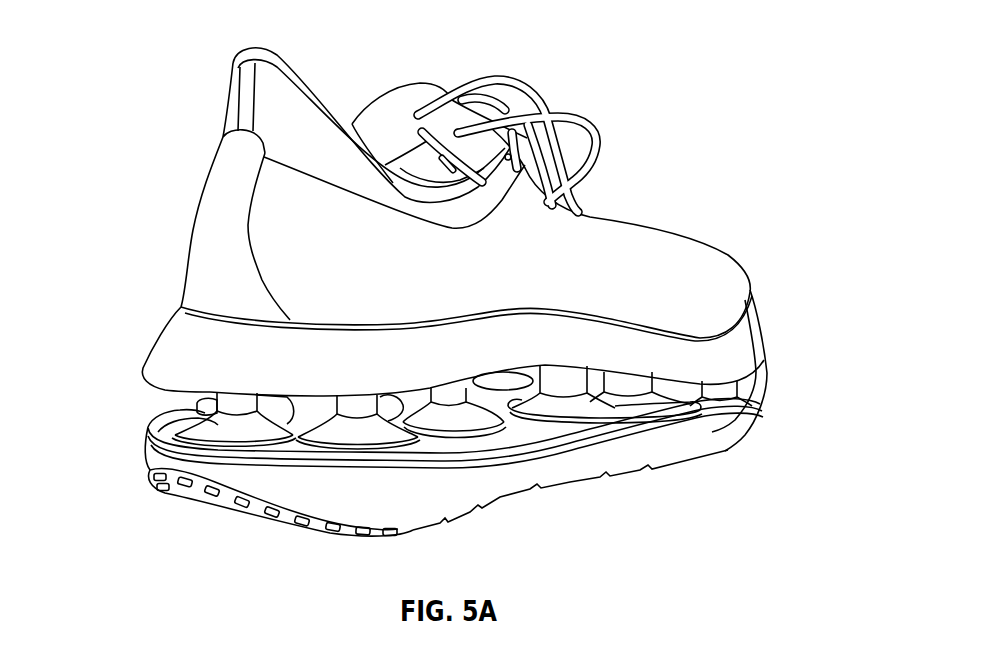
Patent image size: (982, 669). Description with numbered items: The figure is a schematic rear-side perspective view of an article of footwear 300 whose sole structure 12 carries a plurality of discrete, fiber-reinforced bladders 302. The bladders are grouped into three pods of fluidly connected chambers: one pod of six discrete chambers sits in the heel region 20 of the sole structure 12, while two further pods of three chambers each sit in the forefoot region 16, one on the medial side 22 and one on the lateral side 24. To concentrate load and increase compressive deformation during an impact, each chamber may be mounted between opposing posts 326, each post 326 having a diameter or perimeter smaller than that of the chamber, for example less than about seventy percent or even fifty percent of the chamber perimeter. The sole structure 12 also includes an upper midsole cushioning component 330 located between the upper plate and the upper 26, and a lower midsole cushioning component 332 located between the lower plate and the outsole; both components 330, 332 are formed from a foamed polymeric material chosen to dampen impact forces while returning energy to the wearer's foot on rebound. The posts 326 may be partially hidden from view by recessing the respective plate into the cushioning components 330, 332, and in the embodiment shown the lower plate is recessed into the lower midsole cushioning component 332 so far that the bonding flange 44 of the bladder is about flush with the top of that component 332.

The article of footwear 300 is at (732, 206).
The sole structure 12 is at (767, 314).
The forefoot region 16 is at (731, 453).
The heel region 20 is at (286, 531).
The medial side 22 is at (388, 92).
The lateral side 24 is at (605, 256).
The upper 26 is at (718, 268).
The bonding flange 44 is at (460, 406).
The discrete reinforced bladders 302 is at (433, 406).
The posts 326 is at (226, 402).
The upper midsole cushioning component 330 is at (753, 347).
The lower midsole cushioning component 332 is at (735, 424).